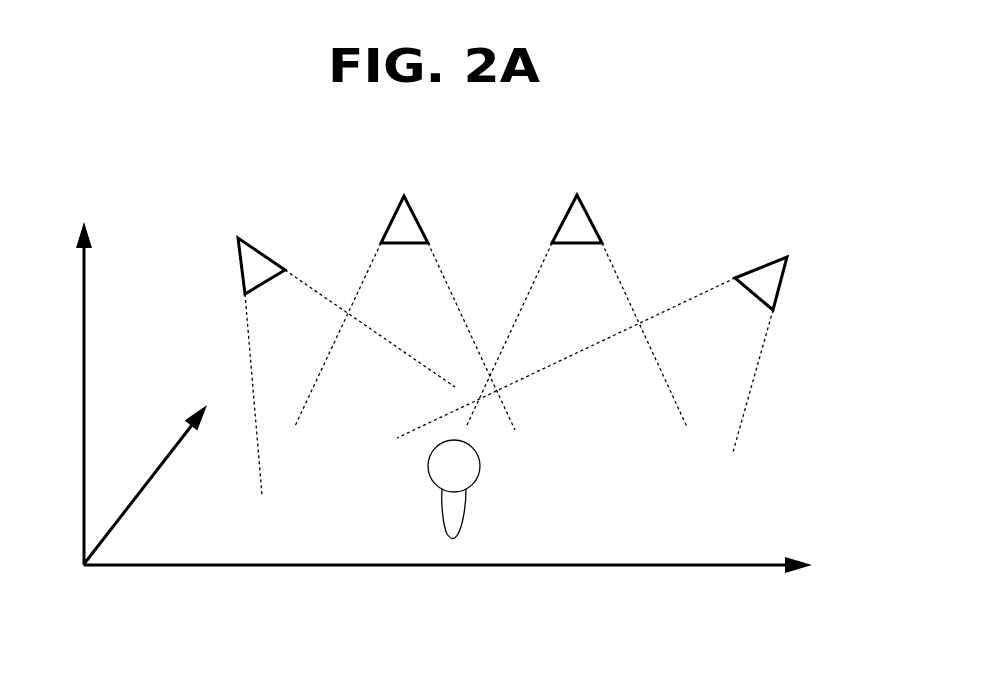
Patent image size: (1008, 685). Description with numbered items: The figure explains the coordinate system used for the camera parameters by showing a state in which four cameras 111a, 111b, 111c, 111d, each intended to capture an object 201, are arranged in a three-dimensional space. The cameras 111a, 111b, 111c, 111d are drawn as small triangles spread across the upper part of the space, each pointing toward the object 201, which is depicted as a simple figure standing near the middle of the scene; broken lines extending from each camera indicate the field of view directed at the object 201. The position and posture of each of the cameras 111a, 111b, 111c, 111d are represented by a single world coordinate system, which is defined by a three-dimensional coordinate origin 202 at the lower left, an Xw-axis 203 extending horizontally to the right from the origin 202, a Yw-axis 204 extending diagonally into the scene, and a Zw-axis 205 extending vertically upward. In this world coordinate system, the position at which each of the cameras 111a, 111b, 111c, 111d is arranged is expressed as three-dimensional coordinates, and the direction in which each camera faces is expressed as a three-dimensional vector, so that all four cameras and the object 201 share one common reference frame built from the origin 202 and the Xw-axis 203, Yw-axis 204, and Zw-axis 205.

The camera 111a is at (260, 248).
The camera 111b is at (418, 218).
The camera 111c is at (590, 217).
The camera 111d is at (752, 268).
The object 201 is at (468, 515).
The three-dimensional coordinate origin 202 is at (84, 571).
The Xw-axis 203 is at (630, 563).
The Yw-axis 204 is at (165, 462).
The Zw-axis 205 is at (87, 323).